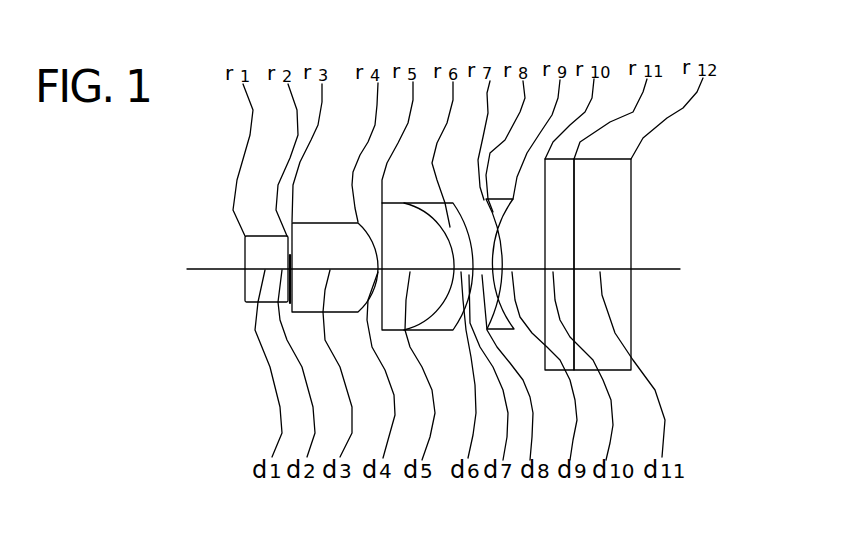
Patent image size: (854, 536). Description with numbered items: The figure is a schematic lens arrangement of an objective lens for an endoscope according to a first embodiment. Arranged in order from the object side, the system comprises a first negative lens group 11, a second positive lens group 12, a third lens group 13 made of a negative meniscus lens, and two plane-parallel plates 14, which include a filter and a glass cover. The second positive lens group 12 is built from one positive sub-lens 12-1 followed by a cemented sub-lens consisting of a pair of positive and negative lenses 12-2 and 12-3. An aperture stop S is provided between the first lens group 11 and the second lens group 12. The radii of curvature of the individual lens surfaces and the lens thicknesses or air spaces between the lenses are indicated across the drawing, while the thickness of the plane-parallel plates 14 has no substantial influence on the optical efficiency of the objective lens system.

The first negative lens group 11 is at (225, 267).
The second positive lens group 12 is at (518, 37).
The positive sub-lens 12-1 is at (335, 171).
The positive lens of cemented sub-lens 12-2 is at (427, 180).
The negative lens of cemented sub-lens 12-3 is at (483, 180).
The third lens group 13 is at (503, 217).
The plane-parallel plates 14 is at (560, 240).
The aperture stop S is at (308, 317).